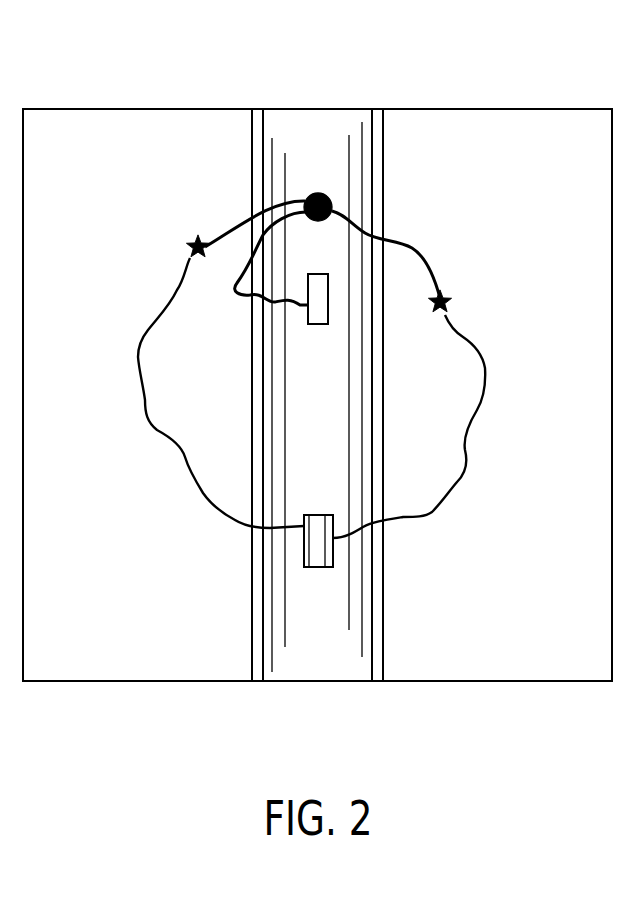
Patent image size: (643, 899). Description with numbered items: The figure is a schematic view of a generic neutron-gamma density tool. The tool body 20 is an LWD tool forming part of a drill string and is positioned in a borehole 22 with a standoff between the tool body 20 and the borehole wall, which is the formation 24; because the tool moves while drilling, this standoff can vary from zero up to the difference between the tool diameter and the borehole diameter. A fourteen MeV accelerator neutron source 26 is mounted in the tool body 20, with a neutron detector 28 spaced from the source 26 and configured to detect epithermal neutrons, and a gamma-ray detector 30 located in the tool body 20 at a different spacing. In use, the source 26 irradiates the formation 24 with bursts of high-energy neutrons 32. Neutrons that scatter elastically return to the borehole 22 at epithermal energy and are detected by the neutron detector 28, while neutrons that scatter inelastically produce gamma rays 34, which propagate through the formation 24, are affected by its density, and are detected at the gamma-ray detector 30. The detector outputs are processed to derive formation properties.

The tool body 20 is at (333, 140).
The borehole 22 is at (385, 129).
The formation 24 is at (147, 611).
The accelerator neutron source 26 is at (314, 192).
The neutron detector 28 is at (299, 320).
The gamma-ray detector 30 is at (335, 556).
The high-energy neutrons 32 is at (209, 229).
The gamma rays 34 is at (184, 456).